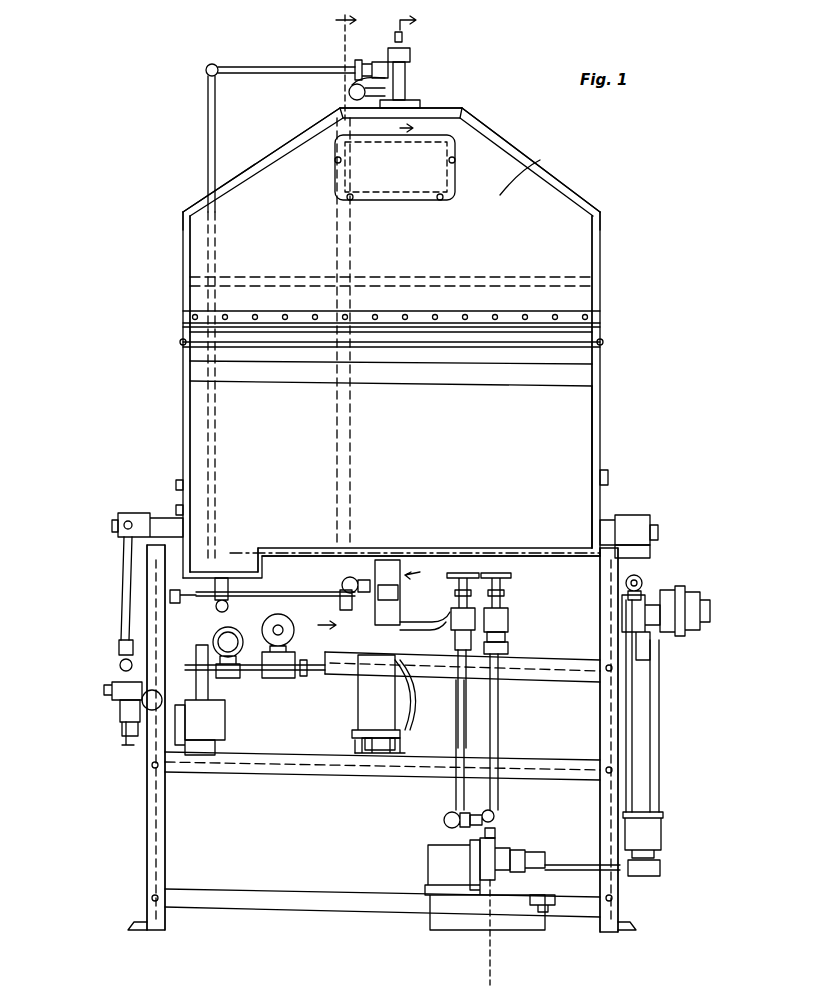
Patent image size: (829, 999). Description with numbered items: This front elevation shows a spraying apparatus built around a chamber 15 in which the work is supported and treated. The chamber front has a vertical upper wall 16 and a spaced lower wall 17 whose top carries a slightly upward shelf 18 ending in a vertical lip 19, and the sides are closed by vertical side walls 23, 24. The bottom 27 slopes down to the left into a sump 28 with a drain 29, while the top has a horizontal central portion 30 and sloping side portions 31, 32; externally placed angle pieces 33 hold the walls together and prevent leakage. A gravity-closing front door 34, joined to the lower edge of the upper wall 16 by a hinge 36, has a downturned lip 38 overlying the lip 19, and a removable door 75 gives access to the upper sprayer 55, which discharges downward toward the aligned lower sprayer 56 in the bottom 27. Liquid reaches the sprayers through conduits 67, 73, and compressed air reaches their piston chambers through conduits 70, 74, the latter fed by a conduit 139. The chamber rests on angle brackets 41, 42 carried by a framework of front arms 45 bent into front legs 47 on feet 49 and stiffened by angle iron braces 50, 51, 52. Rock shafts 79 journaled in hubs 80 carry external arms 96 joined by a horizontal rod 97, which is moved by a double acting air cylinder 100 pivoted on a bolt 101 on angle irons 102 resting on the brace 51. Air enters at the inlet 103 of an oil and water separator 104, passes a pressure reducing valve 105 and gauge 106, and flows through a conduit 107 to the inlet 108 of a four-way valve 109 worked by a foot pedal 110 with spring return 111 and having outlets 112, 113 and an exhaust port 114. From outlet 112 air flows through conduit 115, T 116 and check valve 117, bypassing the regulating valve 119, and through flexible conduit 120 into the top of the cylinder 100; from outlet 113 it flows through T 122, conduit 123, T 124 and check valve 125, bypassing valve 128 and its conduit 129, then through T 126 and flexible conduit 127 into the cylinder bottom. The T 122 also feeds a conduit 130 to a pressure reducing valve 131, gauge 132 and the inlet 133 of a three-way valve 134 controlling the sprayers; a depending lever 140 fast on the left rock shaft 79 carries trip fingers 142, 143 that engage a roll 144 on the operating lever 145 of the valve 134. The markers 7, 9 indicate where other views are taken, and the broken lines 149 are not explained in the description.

The section line 7 is at (331, 326).
The section line 9 is at (415, 74).
The chamber 15 is at (595, 183).
The upper wall 16 is at (536, 165).
The lower wall 17 is at (570, 448).
The shelf 18 is at (590, 380).
The vertical lip 19 is at (590, 360).
The side wall 23 is at (611, 239).
The side wall 24 is at (173, 244).
The bottom 27 is at (478, 550).
The sump 28 is at (262, 548).
The drain 29 is at (235, 590).
The horizontal central portion 30 is at (448, 106).
The sloping side portion 31 is at (503, 122).
The sloping side portion 32 is at (262, 149).
The angle pieces 33 is at (200, 205).
The front door 34 is at (195, 330).
The hinge 36 is at (582, 320).
The lip 38 is at (183, 343).
The angle bracket 41 is at (608, 498).
The angle bracket 42 is at (178, 500).
The front arms 45 is at (163, 578).
The front legs 47 is at (160, 825).
The feet 49 is at (130, 920).
The angle iron brace 50 is at (262, 900).
The angle iron brace 51 is at (278, 760).
The angle iron brace 52 is at (560, 675).
The sprayer 55 is at (424, 68).
The sprayer 56 is at (407, 592).
The conduit 67 is at (352, 78).
The conduit 70 is at (280, 66).
The conduit 73 is at (340, 586).
The conduit 74 is at (292, 605).
The removable door 75 is at (405, 170).
The rock shaft 79 is at (115, 528).
The hub 80 is at (175, 520).
The arms 96 is at (650, 555).
The horizontal rod 97 is at (262, 548).
The double acting air cylinder 100 is at (365, 700).
The bolt 101 is at (405, 750).
The angle irons 102 is at (358, 760).
The inlet 103 is at (645, 585).
The oil and water separator 104 is at (655, 725).
The pressure reducing valve 105 is at (710, 605).
The pressure gauge 106 is at (670, 630).
The conduit 107 is at (582, 862).
The inlet 108 is at (505, 842).
The four-way valve 109 is at (462, 870).
The foot pedal 110 is at (542, 912).
The spring return 111 is at (528, 855).
The outlet 112 is at (498, 818).
The outlet 113 is at (485, 832).
The exhaust port 114 is at (484, 932).
The conduit 115 is at (500, 728).
The T 116 is at (508, 648).
The check valve 117 is at (507, 636).
The valve 119 is at (502, 618).
The flexible conduit 120 is at (400, 745).
The T 122 is at (445, 825).
The conduit 123 is at (490, 725).
The T 124 is at (478, 700).
The check valve 125 is at (398, 600).
The T 126 is at (370, 658).
The flexible conduit 127 is at (415, 700).
The valve 128 is at (475, 600).
The conduit 129 is at (420, 622).
The conduit 130 is at (318, 672).
The pressure reducing valve 131 is at (270, 678).
The pressure gauge 132 is at (235, 680).
The inlet 133 is at (215, 700).
The three-way valve 134 is at (148, 740).
The conduit 139 is at (178, 605).
The depending lever 140 is at (124, 570).
The trip finger 142 is at (118, 655).
The trip finger 143 is at (125, 718).
The roll 144 is at (108, 695).
The operating lever 145 is at (128, 742).
The liquid level 149 is at (475, 275).